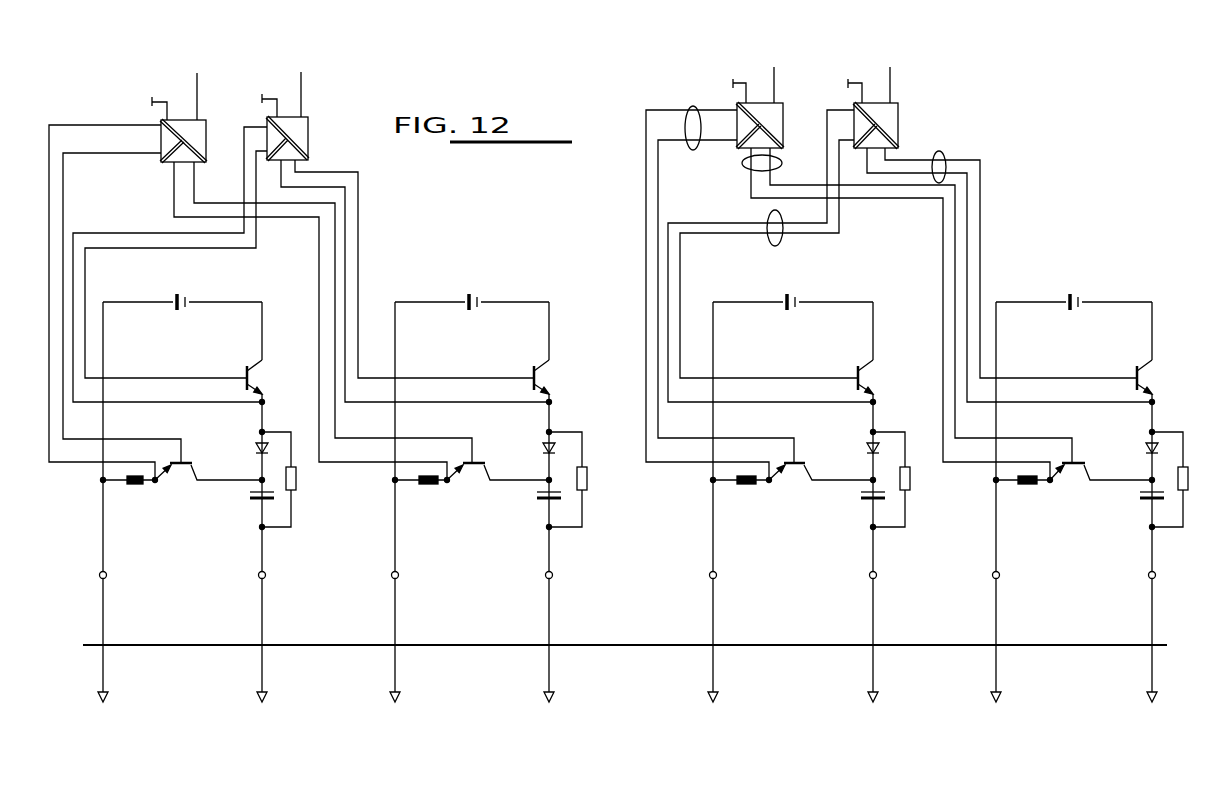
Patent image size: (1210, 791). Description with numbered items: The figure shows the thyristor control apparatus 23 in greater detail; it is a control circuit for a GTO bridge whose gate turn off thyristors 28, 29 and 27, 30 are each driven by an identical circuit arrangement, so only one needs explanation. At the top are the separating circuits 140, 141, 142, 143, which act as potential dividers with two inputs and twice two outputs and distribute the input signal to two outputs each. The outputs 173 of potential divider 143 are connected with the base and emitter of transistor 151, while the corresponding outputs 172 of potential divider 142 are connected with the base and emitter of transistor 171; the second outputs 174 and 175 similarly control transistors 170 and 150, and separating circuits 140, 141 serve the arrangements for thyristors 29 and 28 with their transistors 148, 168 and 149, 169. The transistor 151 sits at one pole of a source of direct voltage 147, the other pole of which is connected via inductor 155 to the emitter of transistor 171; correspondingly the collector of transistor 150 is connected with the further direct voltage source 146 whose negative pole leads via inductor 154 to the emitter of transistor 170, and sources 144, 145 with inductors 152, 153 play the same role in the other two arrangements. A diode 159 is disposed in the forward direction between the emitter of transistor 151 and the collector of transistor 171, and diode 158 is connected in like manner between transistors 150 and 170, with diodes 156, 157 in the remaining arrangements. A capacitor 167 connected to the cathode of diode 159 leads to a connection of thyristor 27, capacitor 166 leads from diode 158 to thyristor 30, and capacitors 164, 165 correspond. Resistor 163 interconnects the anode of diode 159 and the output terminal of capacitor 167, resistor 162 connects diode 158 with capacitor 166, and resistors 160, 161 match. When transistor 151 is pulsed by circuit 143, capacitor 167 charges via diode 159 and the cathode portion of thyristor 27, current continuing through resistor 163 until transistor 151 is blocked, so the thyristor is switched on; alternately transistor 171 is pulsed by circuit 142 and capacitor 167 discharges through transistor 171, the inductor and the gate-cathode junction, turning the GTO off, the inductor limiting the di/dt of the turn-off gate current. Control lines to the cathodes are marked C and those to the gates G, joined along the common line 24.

The apparatus 23 is at (1028, 138).
The common return line 24 is at (83, 643).
The thyristor 27 is at (1094, 504).
The thyristor 28 is at (512, 503).
The thyristor 29 is at (220, 503).
The thyristor 30 is at (832, 503).
The separating circuit 140 is at (205, 126).
The separating circuit 141 is at (310, 136).
The potential divider 142 is at (785, 113).
The potential divider 143 is at (898, 121).
The battery 144 is at (186, 302).
The battery 145 is at (478, 302).
The source of direct voltage 146 is at (796, 302).
The battery 147 is at (1079, 302).
The transistor 148 is at (245, 371).
The transistor 149 is at (534, 371).
The transistor 150 is at (858, 371).
The transistor 151 is at (1137, 371).
The resistor 152 is at (135, 487).
The resistor 153 is at (429, 487).
The inductor 154 is at (745, 487).
The inductor 155 is at (1030, 487).
The diode 156 is at (256, 447).
The diode 157 is at (544, 447).
The diode 158 is at (868, 447).
The diode 159 is at (1146, 447).
The resistor 160 is at (296, 477).
The resistor 161 is at (587, 477).
The resistor 162 is at (910, 477).
The resistor 163 is at (1186, 467).
The capacitor 164 is at (252, 498).
The capacitor 165 is at (539, 498).
The capacitor 166 is at (862, 498).
The capacitor 167 is at (1141, 498).
The transistor 168 is at (184, 470).
The transistor 169 is at (478, 470).
The transistor 170 is at (801, 470).
The transistor 171 is at (1076, 470).
The outputs 172 is at (742, 165).
The outputs 173 is at (945, 152).
The second output 174 is at (693, 106).
The second output 175 is at (768, 243).